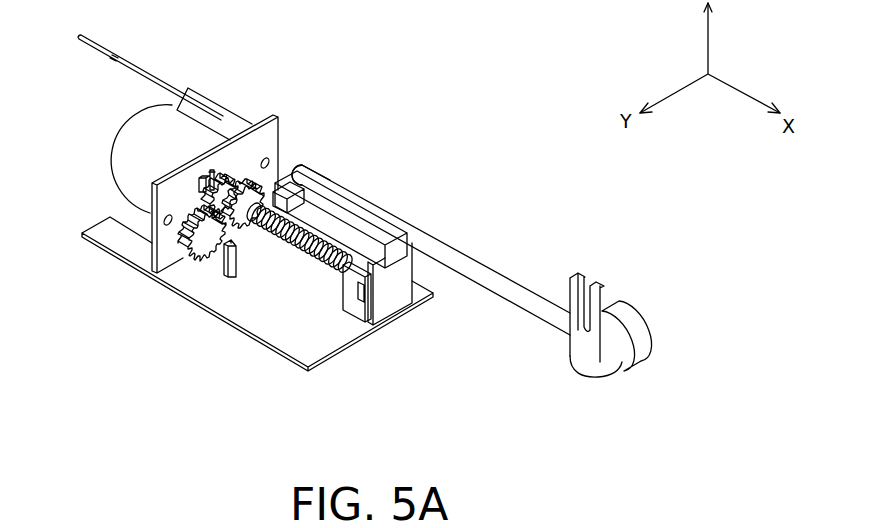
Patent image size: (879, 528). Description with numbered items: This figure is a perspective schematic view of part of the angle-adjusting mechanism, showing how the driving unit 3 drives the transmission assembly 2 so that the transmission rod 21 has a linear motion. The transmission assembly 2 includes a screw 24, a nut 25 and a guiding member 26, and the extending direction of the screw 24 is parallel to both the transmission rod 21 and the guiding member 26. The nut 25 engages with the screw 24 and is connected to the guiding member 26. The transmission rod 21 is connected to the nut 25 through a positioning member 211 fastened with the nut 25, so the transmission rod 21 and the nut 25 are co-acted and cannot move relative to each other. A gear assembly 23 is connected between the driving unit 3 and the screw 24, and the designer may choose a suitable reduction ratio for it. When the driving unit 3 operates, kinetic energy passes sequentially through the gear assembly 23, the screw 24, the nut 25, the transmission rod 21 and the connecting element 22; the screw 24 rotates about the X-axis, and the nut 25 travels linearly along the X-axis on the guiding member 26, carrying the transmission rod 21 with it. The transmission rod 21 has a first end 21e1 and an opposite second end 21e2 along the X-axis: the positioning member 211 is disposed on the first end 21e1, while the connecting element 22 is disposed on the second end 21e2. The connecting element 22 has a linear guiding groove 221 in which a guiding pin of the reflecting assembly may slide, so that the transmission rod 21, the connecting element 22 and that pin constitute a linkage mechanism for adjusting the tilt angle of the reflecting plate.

The transmission assembly 2 is at (492, 398).
The driving unit 3 is at (134, 157).
The transmission rod 21 is at (412, 232).
The first end 21e1 is at (310, 160).
The second end 21e2 is at (647, 312).
The positioning member 211 is at (288, 164).
The connecting element 22 is at (580, 358).
The guiding groove 221 is at (590, 266).
The gear assembly 23 is at (200, 265).
The screw 24 is at (310, 244).
The nut 25 is at (250, 228).
The guiding member 26 is at (340, 216).